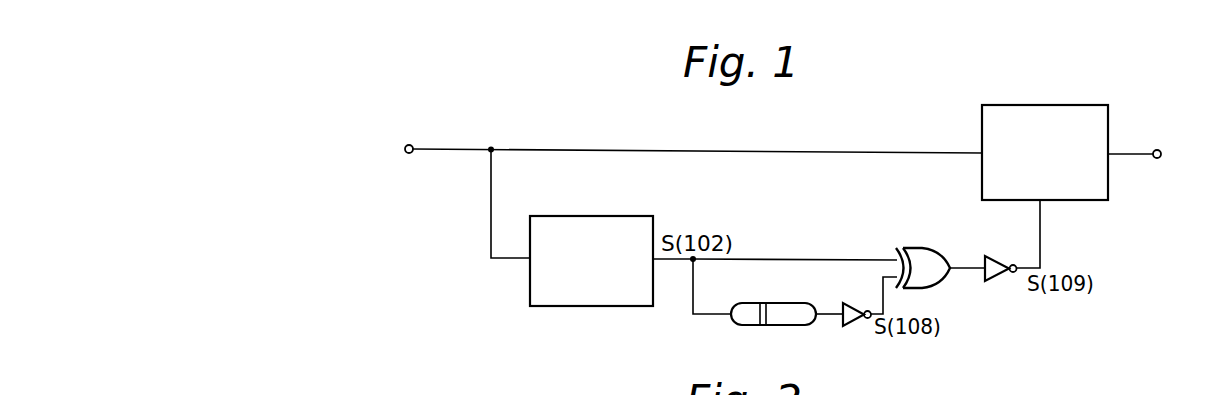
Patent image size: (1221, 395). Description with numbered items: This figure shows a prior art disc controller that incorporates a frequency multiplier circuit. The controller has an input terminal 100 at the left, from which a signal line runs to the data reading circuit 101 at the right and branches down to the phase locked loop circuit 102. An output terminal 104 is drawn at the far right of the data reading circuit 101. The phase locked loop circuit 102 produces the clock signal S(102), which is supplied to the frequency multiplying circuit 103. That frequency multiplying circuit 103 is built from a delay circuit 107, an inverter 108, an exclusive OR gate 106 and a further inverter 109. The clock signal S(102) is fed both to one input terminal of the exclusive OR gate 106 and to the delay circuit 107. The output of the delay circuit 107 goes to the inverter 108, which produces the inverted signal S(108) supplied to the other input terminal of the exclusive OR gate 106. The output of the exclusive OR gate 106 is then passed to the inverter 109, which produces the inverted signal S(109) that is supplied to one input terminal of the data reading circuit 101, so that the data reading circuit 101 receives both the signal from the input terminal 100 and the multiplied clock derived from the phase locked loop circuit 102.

The input terminal 100 is at (412, 145).
The data reading circuit 101 is at (1040, 105).
The phase locked loop circuit 102 is at (593, 216).
The frequency multiplying circuit 103 is at (767, 230).
The output terminal 104 is at (1160, 150).
The exclusive OR gate 106 is at (932, 286).
The delay circuit 107 is at (775, 326).
The inverter 108 is at (856, 322).
The inverter 109 is at (1004, 282).